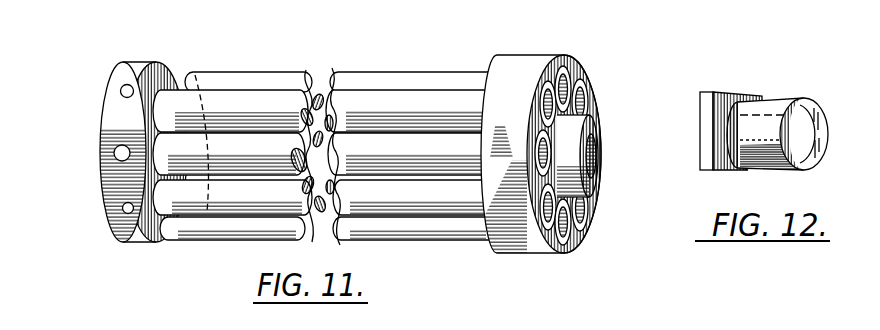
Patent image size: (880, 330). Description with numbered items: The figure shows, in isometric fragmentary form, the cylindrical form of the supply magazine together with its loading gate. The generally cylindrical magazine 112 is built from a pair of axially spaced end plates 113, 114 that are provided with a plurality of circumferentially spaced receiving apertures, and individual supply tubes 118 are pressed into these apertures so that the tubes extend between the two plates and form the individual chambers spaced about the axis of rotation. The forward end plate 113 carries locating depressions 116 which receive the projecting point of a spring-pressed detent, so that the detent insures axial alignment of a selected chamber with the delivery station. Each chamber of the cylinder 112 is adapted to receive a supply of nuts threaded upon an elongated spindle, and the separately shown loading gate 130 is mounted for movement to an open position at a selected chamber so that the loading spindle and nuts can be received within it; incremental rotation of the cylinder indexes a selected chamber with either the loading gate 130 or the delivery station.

In FIG. 11, the cylindrical magazine 112 is at (322, 147).
In FIG. 11, the end plate 113 is at (182, 66).
In FIG. 11, the end plate 114 is at (532, 62).
In FIG. 11, the locating depressions 116 is at (122, 205).
In FIG. 11, the supply tubes 118 is at (385, 77).
In FIG. 12, the loading gate 130 is at (812, 102).